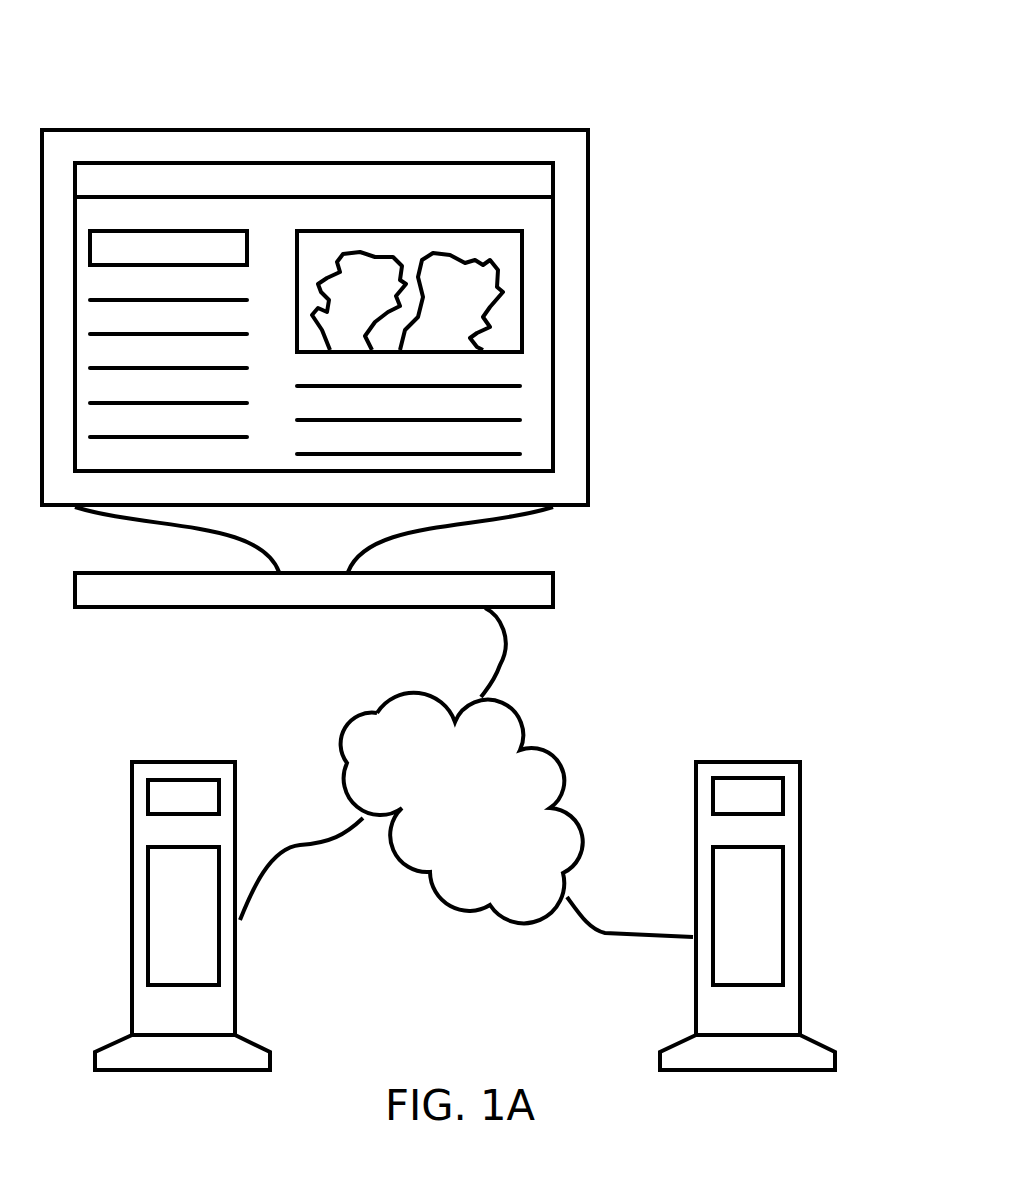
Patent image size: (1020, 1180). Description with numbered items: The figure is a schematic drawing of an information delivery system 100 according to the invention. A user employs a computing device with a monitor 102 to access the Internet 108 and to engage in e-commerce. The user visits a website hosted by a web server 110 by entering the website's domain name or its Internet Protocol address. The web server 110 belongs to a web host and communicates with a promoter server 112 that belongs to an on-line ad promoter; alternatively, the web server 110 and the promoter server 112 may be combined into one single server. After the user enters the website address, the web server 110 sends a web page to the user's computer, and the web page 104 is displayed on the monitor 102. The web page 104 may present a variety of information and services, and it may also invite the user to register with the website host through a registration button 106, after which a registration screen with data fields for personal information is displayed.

The system 100 is at (650, 48).
The monitor 102 is at (588, 248).
The web page 104 is at (556, 402).
The registration button 106 is at (168, 248).
The Internet 108 is at (565, 765).
The web server 110 is at (182, 760).
The promoter server 112 is at (748, 760).